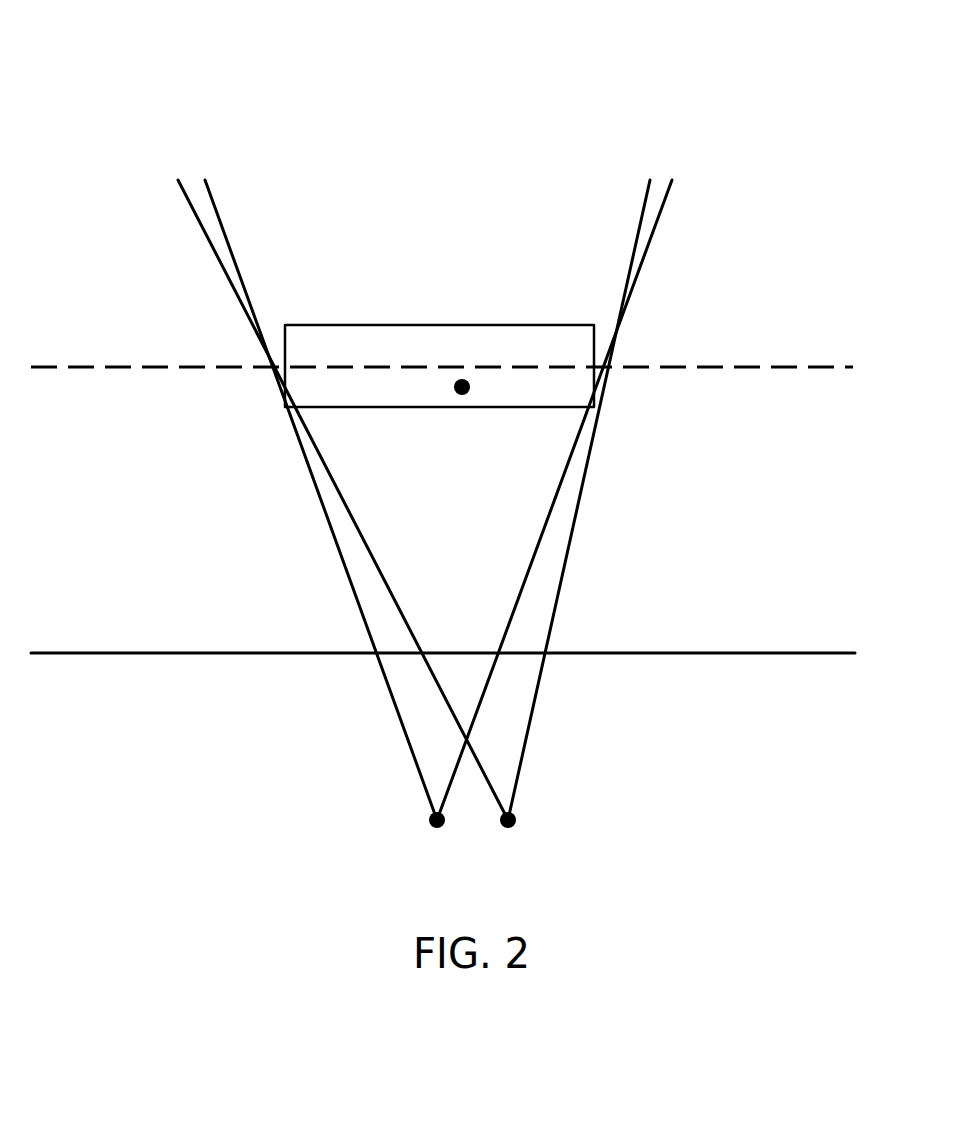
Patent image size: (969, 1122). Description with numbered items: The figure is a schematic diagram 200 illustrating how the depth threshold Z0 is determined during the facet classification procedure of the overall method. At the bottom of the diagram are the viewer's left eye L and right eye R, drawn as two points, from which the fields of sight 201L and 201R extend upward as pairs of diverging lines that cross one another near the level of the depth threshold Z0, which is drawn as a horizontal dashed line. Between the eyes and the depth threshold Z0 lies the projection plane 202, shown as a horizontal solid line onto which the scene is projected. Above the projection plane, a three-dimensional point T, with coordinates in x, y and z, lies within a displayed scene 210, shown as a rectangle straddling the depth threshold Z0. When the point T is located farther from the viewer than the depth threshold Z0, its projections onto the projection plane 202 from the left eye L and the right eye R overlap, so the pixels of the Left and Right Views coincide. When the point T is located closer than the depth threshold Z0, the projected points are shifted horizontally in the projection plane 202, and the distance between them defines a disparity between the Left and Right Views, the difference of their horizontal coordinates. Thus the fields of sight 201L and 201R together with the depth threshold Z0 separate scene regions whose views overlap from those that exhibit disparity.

The schematic diagram 200 is at (716, 105).
The depth threshold Z0 is at (775, 368).
The projection plane 202 is at (762, 652).
The displayed scene 210 is at (377, 325).
The 3D point T is at (462, 380).
The field of sight for the left eye 201L is at (412, 700).
The field of sight for the right eye 201R is at (517, 700).
The left eye L is at (430, 820).
The right eye R is at (516, 820).